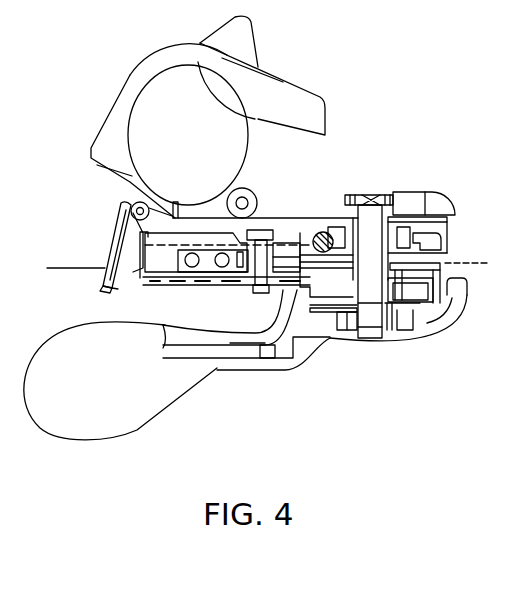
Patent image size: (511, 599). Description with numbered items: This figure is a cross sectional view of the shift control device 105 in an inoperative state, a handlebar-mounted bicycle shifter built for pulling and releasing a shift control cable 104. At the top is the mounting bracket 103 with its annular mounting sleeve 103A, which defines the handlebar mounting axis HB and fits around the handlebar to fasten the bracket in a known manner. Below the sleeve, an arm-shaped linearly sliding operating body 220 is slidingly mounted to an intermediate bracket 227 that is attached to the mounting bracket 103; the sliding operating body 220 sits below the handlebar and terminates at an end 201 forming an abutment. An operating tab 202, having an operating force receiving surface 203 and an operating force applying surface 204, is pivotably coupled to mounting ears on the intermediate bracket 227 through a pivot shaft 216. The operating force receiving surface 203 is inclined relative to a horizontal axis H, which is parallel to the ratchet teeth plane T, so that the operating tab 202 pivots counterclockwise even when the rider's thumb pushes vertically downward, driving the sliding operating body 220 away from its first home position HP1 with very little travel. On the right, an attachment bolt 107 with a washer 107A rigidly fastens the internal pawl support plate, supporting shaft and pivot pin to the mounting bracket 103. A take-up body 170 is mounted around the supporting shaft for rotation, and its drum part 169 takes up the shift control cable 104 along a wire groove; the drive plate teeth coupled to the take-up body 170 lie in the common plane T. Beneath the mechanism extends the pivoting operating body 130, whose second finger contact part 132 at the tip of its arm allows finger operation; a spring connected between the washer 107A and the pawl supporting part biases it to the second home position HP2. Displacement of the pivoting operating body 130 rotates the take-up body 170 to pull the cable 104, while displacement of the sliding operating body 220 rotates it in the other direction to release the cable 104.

The mounting bracket 103 is at (408, 200).
The annular mounting sleeve 103A is at (125, 85).
The shift control cable 104 is at (437, 241).
The shift control device 105 is at (326, 60).
The attachment bolt 107 is at (368, 216).
The washer 107A is at (413, 307).
The pivoting operating body 130 is at (226, 382).
The second finger contact part 132 is at (73, 422).
The drum part 169 is at (450, 247).
The take-up body 170 is at (447, 231).
The end 201 is at (117, 290).
The operating tab 202 is at (108, 265).
The operating force receiving surface 203 is at (98, 276).
The operating force applying surface 204 is at (117, 232).
The pivot shaft 216 is at (133, 205).
The sliding operating body 220 is at (213, 297).
The intermediate bracket 227 is at (148, 283).
The horizontal axis H is at (63, 268).
The handlebar mounting axis HB is at (191, 127).
The first home position HP1 is at (73, 232).
The second home position HP2 is at (127, 441).
The ratchet teeth plane T is at (471, 262).